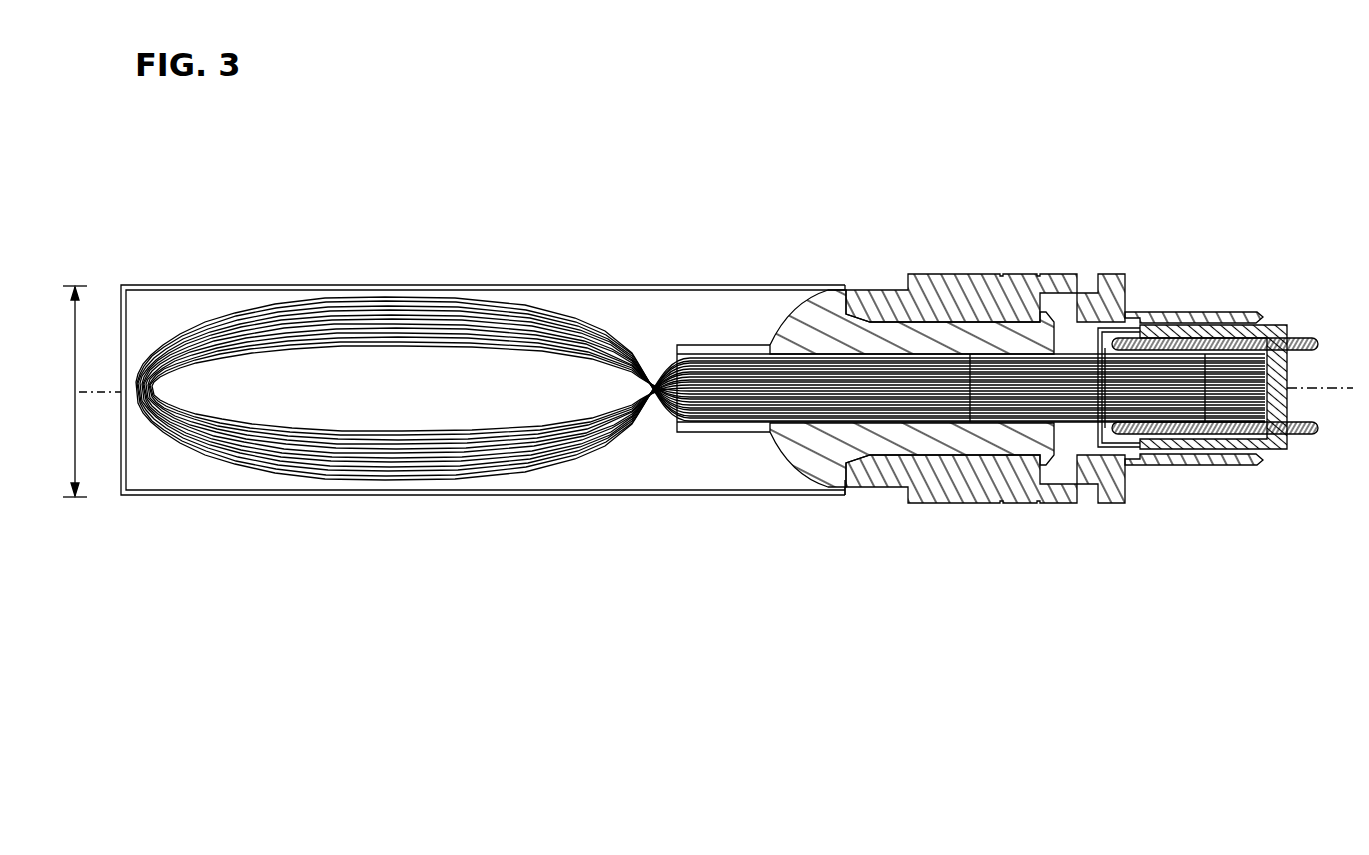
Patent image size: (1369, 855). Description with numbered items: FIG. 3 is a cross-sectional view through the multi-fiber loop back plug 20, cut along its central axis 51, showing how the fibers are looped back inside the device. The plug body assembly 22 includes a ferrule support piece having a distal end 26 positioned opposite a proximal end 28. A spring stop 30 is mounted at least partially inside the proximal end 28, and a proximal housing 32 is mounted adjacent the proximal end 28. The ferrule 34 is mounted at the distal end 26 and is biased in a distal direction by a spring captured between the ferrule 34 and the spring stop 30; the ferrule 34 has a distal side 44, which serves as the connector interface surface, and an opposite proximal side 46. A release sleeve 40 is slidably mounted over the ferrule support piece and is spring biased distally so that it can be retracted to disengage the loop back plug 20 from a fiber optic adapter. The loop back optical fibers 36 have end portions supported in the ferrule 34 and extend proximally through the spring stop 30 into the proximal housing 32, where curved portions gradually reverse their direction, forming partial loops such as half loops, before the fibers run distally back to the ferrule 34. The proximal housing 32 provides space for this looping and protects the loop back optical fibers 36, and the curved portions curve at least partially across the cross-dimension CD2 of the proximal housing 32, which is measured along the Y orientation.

The multi-fiber loop back plug 20 is at (730, 118).
The plug body assembly 22 is at (838, 280).
The distal end 26 is at (1260, 459).
The proximal end 28 is at (847, 488).
The spring stop 30 is at (790, 460).
The proximal housing 32 is at (563, 284).
The ferrule 34 is at (1277, 330).
The loop back optical fibers 36 is at (465, 298).
The release sleeve 40 is at (984, 273).
The distal side 44 is at (1287, 357).
The proximal side 46 is at (1260, 360).
The central axis 51 is at (87, 392).
The cross-dimension CD2 is at (65, 391).